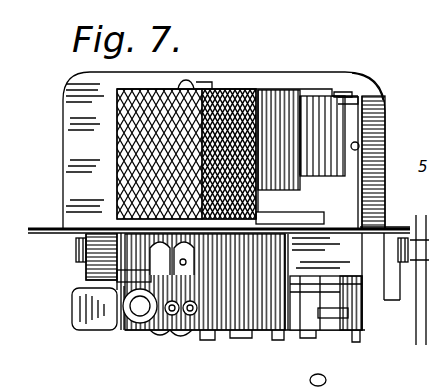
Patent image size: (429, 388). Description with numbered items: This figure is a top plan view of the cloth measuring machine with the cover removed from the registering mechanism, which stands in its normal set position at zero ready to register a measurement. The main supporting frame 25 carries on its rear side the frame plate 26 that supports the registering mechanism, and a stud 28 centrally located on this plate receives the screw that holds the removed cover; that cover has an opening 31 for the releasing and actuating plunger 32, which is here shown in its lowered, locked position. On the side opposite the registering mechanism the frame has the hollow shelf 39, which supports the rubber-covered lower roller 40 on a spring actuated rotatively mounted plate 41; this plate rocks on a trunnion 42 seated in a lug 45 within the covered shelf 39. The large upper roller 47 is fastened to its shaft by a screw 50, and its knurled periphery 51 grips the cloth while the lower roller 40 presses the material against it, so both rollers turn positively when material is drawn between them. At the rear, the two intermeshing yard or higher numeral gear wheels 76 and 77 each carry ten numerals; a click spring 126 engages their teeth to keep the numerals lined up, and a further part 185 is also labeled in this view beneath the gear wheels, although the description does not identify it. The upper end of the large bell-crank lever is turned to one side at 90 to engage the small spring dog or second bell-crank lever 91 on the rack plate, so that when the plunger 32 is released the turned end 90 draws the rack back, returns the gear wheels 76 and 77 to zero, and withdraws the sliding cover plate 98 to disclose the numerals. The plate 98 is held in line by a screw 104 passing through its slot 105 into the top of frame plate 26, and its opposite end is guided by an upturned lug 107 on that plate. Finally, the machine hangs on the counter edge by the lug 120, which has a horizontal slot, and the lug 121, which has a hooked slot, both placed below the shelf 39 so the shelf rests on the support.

The main supporting frame 25 is at (371, 83).
The frame plate 26 is at (77, 251).
The stud 28 is at (241, 338).
The opening 31 is at (417, 293).
The releasing and actuating plunger 32 is at (96, 331).
The shelf 39 is at (297, 82).
The lower roller 40 is at (163, 79).
The spring actuated rotatively mounted plate 41 is at (380, 147).
The trunnion 42 is at (346, 92).
The lug 45 is at (354, 97).
The large upper roller 47 is at (256, 84).
The screw 50 is at (187, 80).
The periphery 51 is at (218, 82).
The higher numeral gear wheel 76 is at (206, 341).
The higher numeral gear wheel 77 is at (146, 324).
The turned end 90 is at (356, 342).
The spring dog or second spring bell-crank lever 91 is at (280, 340).
The sliding cover plate 98 is at (364, 316).
The screw 104 is at (310, 338).
The slot 105 is at (362, 290).
The upturned lug 107 is at (116, 283).
The lug 120 is at (385, 228).
The lug 121 is at (36, 221).
The click spring 126 is at (127, 333).
The link 185 is at (166, 338).